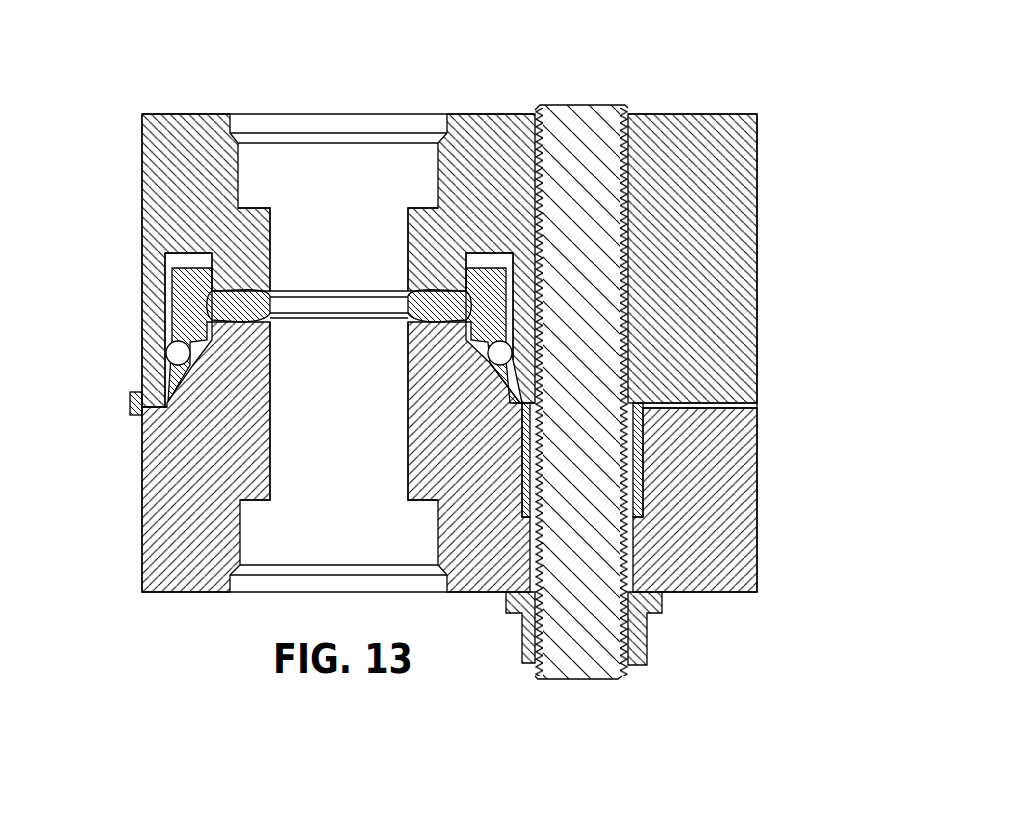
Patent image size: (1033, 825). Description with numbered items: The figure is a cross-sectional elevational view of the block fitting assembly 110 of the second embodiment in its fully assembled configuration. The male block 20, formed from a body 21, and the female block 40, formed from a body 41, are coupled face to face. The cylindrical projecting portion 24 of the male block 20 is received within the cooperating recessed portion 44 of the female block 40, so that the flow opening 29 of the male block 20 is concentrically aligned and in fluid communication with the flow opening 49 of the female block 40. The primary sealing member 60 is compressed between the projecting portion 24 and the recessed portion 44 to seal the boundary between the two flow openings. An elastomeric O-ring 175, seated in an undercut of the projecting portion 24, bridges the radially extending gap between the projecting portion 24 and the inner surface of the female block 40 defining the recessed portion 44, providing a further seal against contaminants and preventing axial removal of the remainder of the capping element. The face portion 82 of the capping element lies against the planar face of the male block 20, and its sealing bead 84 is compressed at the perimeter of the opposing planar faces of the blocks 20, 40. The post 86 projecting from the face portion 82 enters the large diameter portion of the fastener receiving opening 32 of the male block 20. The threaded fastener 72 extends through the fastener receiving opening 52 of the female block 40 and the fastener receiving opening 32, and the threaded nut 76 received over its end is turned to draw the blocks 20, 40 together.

The block fitting assembly 110 is at (452, 373).
The fastener receiving opening 52 is at (605, 376).
The female seal fitting block 40 is at (506, 260).
The body 41 is at (720, 258).
The male seal fitting block 20 is at (504, 457).
The body 21 is at (720, 500).
The flow opening 49 is at (407, 246).
The flow opening 29 is at (407, 410).
The primary sealing member 60 is at (353, 322).
The recessed portion 44 is at (174, 259).
The projecting portion 24 is at (164, 305).
The O-ring 175 is at (166, 358).
The sealing bead 84 is at (130, 410).
The face portion 82 is at (668, 403).
The post 86 is at (643, 450).
The threaded nut 76 is at (585, 660).
The threaded fastener 72 is at (580, 668).
The fastener receiving opening 32 is at (645, 614).